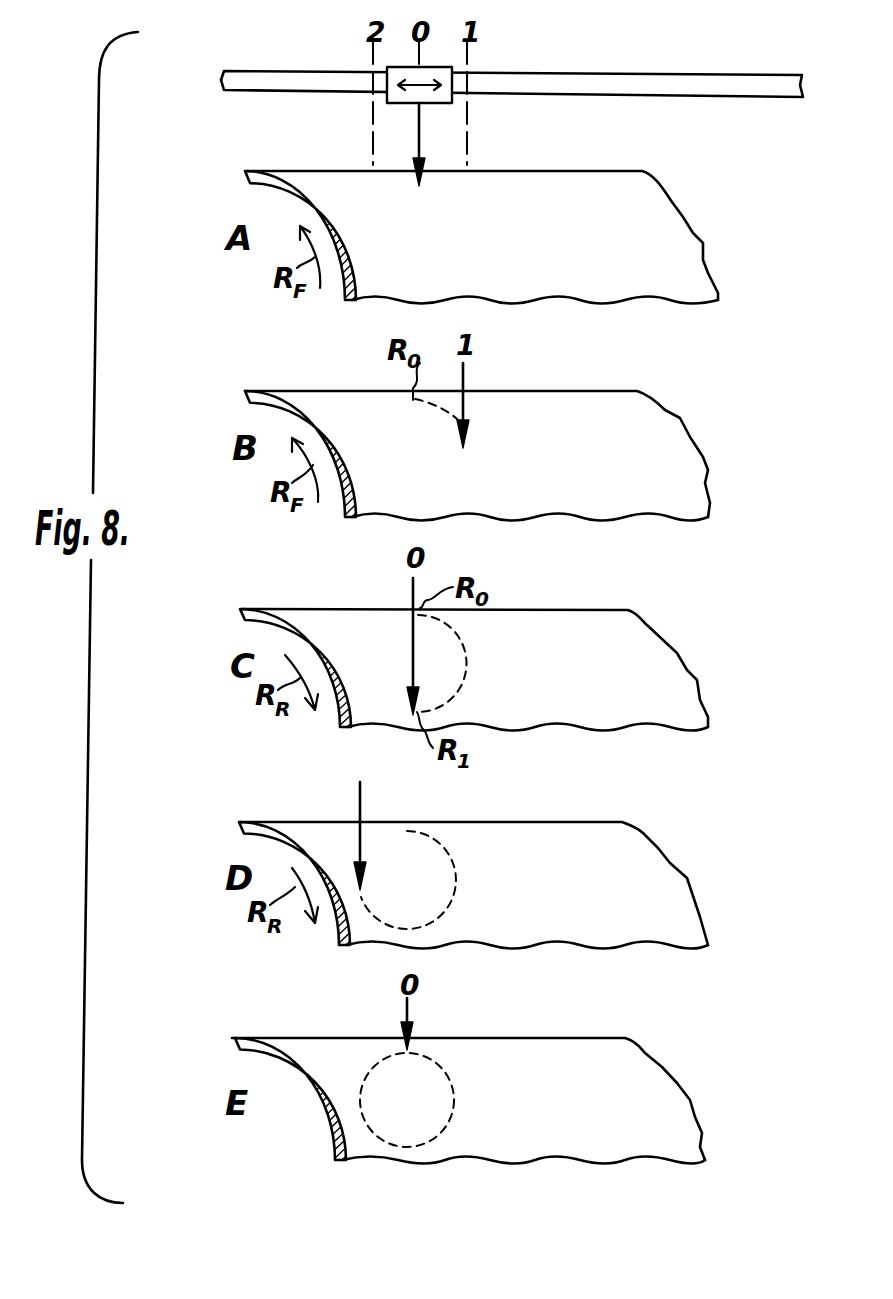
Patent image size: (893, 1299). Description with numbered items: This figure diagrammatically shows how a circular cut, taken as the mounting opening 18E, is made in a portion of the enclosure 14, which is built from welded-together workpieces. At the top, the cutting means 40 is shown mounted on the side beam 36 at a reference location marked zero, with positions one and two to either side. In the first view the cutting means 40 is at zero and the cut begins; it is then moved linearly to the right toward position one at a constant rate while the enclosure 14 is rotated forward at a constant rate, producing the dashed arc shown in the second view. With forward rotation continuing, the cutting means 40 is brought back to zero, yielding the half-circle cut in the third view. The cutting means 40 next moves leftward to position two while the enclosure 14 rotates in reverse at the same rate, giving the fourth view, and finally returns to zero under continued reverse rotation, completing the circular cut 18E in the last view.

The enclosure 14 is at (670, 217).
The side beam 36 is at (658, 92).
The cutting means 40 is at (440, 105).
The mounting opening 18E is at (455, 1088).